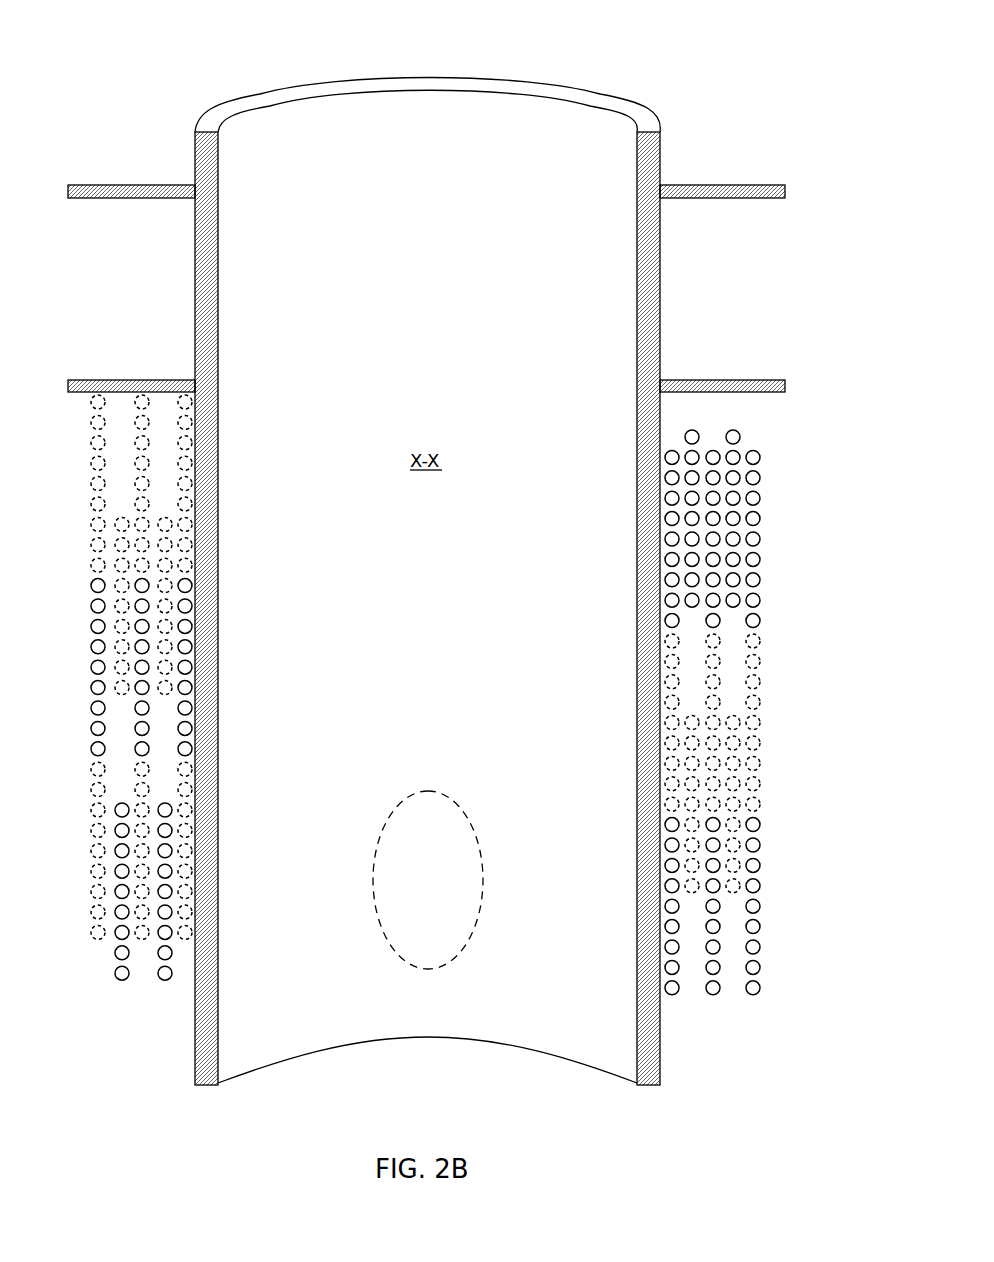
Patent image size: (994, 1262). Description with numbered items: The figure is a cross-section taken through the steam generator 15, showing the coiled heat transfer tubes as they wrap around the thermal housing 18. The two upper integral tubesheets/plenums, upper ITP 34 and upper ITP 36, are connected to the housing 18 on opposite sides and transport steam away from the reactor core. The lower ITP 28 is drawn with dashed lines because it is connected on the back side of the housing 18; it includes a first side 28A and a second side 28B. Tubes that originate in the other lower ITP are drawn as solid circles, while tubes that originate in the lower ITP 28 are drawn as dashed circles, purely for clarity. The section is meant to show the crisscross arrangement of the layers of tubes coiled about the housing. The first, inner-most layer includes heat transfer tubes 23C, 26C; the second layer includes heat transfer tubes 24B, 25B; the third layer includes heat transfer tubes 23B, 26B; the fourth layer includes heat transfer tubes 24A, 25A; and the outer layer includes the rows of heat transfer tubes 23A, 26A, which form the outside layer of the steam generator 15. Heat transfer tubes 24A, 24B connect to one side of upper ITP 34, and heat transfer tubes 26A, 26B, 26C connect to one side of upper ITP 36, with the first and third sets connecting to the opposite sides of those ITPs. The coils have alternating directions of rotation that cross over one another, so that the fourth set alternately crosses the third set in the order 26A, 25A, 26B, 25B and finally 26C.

The steam generator 15 is at (660, 50).
The thermal housing 18 is at (520, 80).
The upper integral tubesheet/plenum 34 is at (93, 176).
The upper integral tubesheet/plenum 36 is at (722, 182).
The row of heat transfer tubes 23A is at (90, 752).
The heat transfer tubes 23B is at (140, 757).
The heat transfer tubes 23C is at (195, 757).
The heat transfer tubes 24A is at (122, 985).
The heat transfer tubes 24B is at (165, 985).
The heat transfer tubes 25A is at (122, 524).
The heat transfer tubes 25B is at (165, 524).
The row of heat transfer tubes 26A is at (87, 392).
The heat transfer tubes 26B is at (140, 392).
The heat transfer tubes 26C is at (180, 392).
The lower integral tubesheet/plenum 28 is at (449, 892).
The first side of lower ITP 28A is at (478, 908).
The second side of lower ITP 28B is at (388, 857).